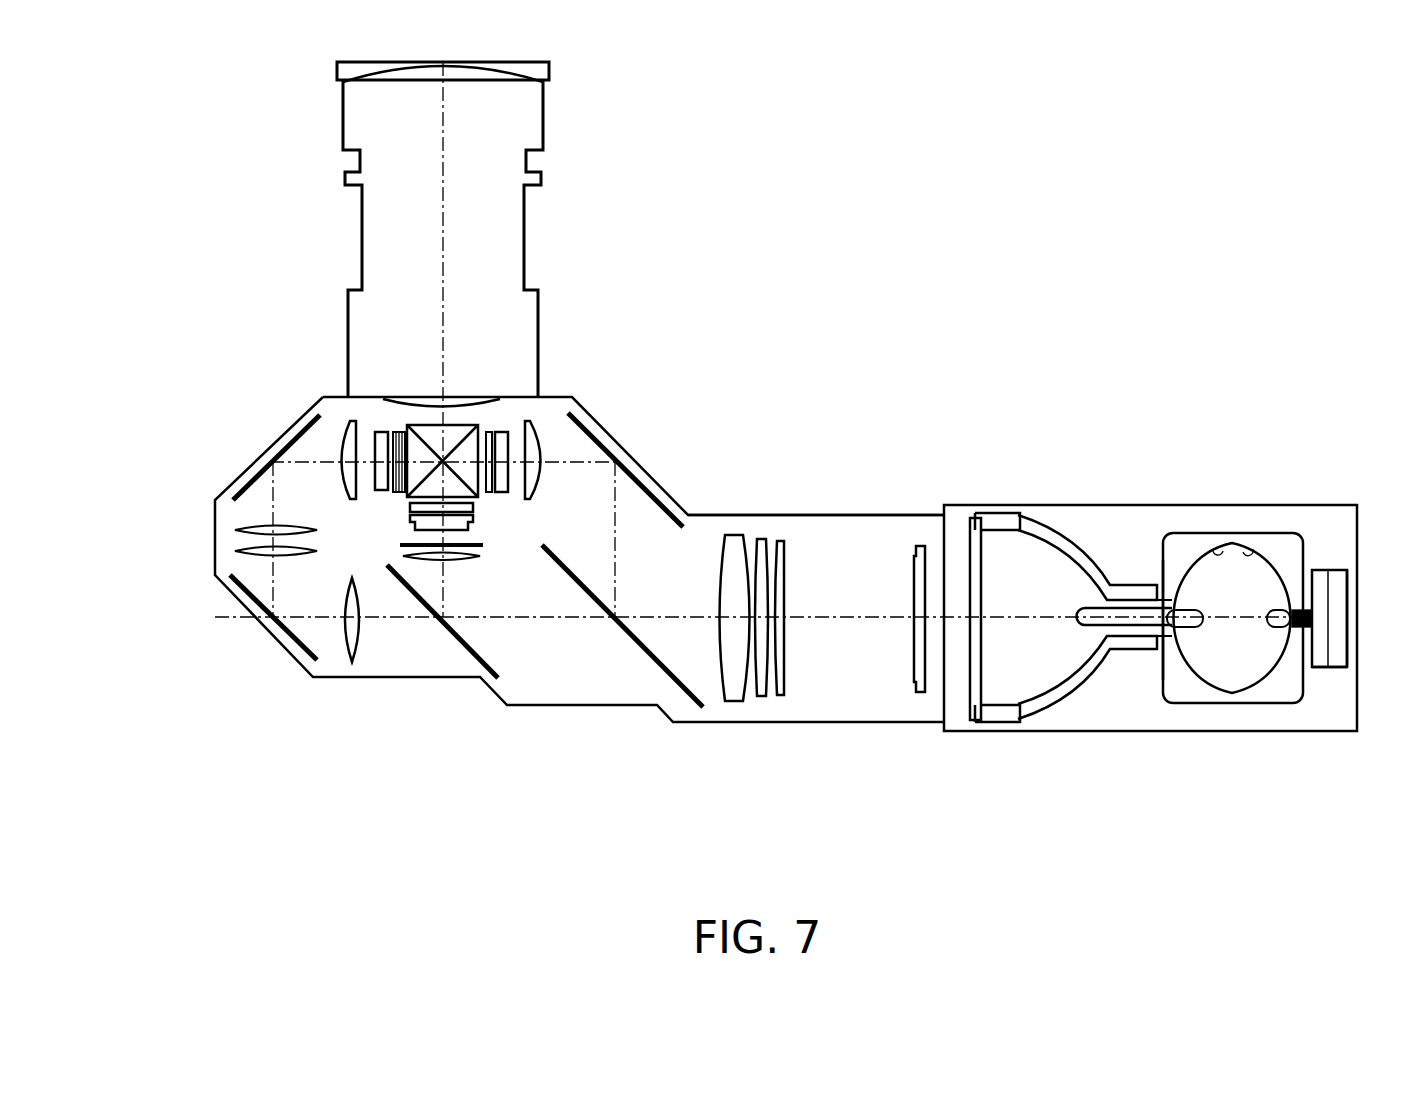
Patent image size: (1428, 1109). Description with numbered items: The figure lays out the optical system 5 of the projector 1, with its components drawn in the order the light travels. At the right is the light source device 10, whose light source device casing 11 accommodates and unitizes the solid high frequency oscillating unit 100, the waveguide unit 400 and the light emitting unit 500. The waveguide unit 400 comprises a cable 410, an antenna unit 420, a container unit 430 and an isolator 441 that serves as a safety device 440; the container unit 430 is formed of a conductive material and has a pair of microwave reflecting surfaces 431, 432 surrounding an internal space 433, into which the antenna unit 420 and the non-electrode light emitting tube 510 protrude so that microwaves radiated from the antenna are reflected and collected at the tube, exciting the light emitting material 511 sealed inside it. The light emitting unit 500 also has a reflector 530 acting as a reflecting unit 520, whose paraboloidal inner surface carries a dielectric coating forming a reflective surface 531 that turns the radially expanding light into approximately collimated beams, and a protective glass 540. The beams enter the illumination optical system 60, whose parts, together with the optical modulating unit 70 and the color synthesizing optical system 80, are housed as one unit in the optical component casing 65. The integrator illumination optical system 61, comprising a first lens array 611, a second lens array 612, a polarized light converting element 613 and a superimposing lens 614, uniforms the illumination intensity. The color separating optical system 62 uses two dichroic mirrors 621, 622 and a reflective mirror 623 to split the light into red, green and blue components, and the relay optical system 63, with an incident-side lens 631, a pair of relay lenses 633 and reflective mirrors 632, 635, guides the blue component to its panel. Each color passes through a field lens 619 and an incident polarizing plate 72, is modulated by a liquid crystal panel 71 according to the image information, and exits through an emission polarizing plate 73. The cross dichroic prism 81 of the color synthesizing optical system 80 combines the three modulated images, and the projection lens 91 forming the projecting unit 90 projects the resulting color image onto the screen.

The projector 1 is at (937, 238).
The optical system 5 is at (892, 310).
The light source device 10 is at (1171, 623).
The light source device casing 11 is at (1022, 505).
The illumination optical system 60 is at (754, 435).
The integrator illumination optical system 61 is at (768, 740).
The color separating optical system 62 is at (692, 548).
The relay optical system 63 is at (262, 685).
The optical component casing 65 is at (830, 512).
The optical modulating unit 70 is at (384, 522).
The liquid crystal panel 71 is at (509, 430).
The incident polarizing plate 72 is at (445, 488).
The emission polarizing plate 73 is at (304, 504).
The color synthesizing optical system 80 is at (441, 328).
The cross dichroic prism 81 is at (437, 430).
The projecting unit 90 is at (400, 246).
The projection lens 91 is at (348, 232).
The solid high frequency oscillating unit 100 is at (1340, 670).
The waveguide unit 400 is at (1410, 415).
The cable 410 is at (1330, 567).
The antenna unit 420 is at (1300, 610).
The container unit 430 is at (1260, 460).
The microwave reflecting surface 431 is at (1275, 607).
The microwave reflecting surface 432 is at (1235, 545).
The space 433 is at (1200, 583).
The safety device 440 is at (1360, 470).
The isolator 441 is at (1345, 570).
The light emitting unit 500 is at (1000, 828).
The non-electrode light emitting tube 510 is at (1110, 627).
The light emitting material 511 is at (1175, 632).
The reflecting unit 520 is at (1082, 780).
The reflector 530 is at (1070, 690).
The reflective surface 531 is at (1022, 690).
The protective glass 540 is at (962, 700).
The first lens array 611 is at (912, 656).
The second lens array 612 is at (787, 692).
The polarized light converting element 613 is at (762, 695).
The superimposing lens 614 is at (718, 657).
The field lens 619 is at (340, 498).
The dichroic mirror 621 is at (655, 668).
The dichroic mirror 622 is at (465, 650).
The reflective mirror 623 is at (650, 505).
The incident-side lens 631 is at (355, 665).
The reflective mirror 632 is at (228, 598).
The relay lens 633 is at (235, 530).
The reflective mirror 635 is at (270, 452).